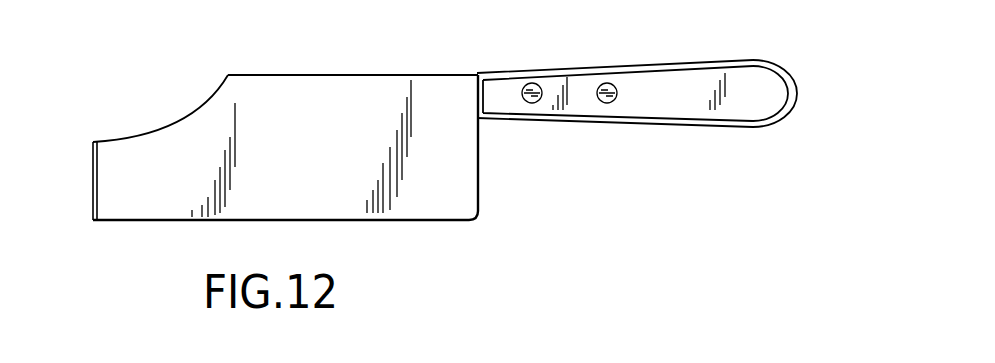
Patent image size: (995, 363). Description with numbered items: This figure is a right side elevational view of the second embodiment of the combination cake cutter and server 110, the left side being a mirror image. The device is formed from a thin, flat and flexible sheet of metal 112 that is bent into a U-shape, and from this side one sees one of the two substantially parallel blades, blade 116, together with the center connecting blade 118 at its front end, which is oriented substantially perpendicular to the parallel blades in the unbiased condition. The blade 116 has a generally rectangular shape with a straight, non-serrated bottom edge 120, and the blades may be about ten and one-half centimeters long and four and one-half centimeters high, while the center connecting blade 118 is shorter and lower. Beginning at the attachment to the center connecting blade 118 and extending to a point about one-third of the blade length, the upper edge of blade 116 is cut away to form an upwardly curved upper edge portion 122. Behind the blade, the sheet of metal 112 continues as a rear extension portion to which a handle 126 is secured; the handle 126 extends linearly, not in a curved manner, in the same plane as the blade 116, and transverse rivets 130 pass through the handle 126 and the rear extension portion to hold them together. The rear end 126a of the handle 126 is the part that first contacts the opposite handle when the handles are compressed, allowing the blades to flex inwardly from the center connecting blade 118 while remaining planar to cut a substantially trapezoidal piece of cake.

The combination cake cutter and server 110 is at (73, 138).
The thin, flat and flexible sheet of metal 112 is at (102, 222).
The blade 116 is at (375, 78).
The center connecting blade 118 is at (93, 173).
The bottom edge 120 is at (355, 222).
The upwardly curved upper edge portion 122 is at (180, 118).
The handle 126 is at (695, 113).
The rear end of handle 126a is at (762, 80).
The transverse rivets 130 is at (598, 88).